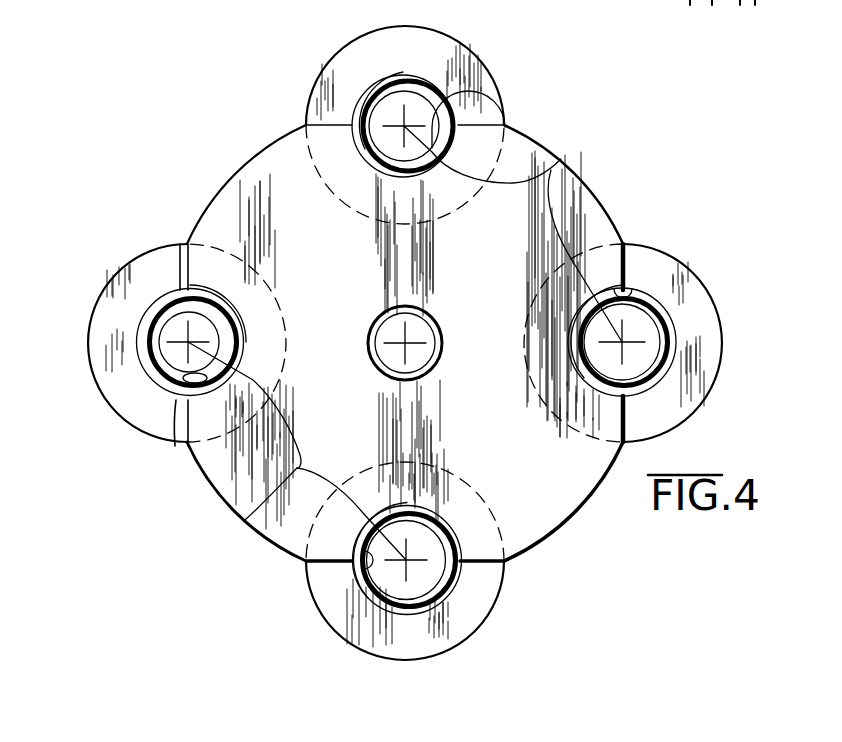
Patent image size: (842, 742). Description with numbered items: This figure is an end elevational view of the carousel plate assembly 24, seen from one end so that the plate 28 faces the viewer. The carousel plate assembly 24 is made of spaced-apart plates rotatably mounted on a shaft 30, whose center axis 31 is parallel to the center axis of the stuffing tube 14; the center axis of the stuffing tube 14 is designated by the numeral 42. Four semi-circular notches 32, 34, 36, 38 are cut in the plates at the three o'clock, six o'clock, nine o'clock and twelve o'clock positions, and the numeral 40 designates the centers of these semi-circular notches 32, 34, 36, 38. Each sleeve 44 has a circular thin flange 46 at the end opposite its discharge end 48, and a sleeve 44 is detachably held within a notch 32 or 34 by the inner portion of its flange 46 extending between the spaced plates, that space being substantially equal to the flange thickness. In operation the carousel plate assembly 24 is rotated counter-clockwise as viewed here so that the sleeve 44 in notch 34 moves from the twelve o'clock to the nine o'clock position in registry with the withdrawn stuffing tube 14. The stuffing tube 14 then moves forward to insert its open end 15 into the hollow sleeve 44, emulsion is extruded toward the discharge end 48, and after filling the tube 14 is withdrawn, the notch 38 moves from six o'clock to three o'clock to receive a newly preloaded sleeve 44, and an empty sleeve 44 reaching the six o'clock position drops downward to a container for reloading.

The stuffing tube 14 is at (155, 378).
The open end 15 is at (172, 373).
The carousel plate assembly 24 is at (262, 152).
The plate 28 is at (258, 197).
The shaft 30 is at (425, 326).
The center axis 31 is at (405, 343).
The semi-circular notch 32 is at (628, 284).
The semi-circular notch 34 is at (486, 92).
The semi-circular notch 36 is at (171, 446).
The semi-circular notch 38 is at (362, 562).
The center of semi-circular notch 40 is at (560, 162).
The center axis of stuffing tube 42 is at (176, 322).
The sleeve 44 is at (367, 90).
The circular thin flange 46 is at (380, 55).
The discharge end 48 is at (148, 338).